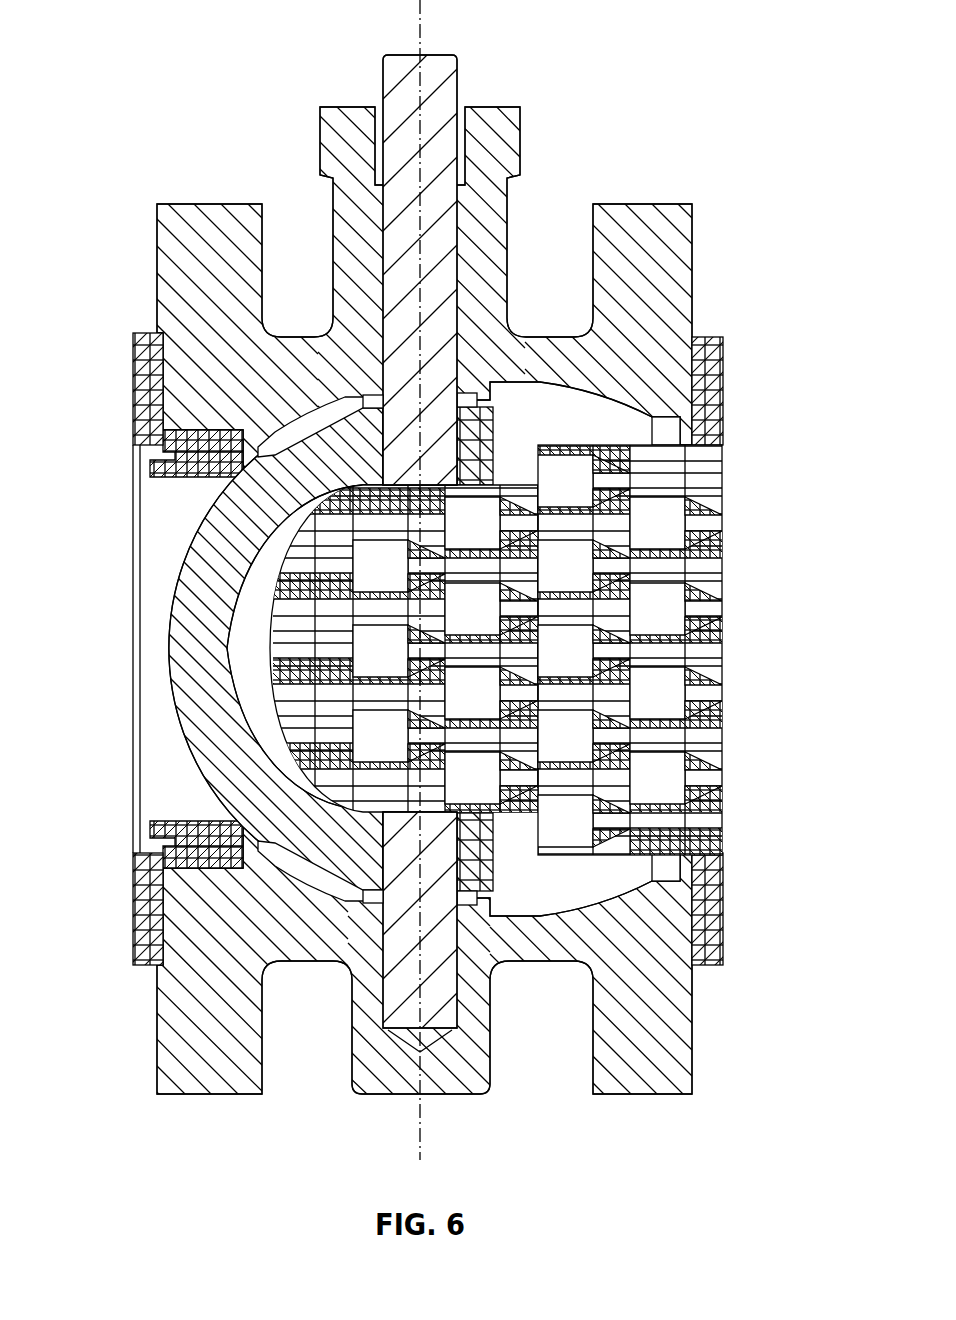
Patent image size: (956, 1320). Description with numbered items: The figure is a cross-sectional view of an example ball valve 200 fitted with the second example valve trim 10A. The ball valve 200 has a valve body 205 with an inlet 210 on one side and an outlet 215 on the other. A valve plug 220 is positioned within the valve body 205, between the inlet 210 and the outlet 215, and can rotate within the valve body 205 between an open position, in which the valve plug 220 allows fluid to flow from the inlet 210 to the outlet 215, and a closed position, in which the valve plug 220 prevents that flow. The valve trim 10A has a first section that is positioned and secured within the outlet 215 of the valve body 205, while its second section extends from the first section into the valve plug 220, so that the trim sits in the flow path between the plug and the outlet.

The ball valve 200 is at (188, 78).
The valve body 205 is at (178, 246).
The inlet 210 is at (152, 524).
The outlet 215 is at (667, 433).
The valve plug 220 is at (160, 648).
The valve trim 10A is at (730, 672).